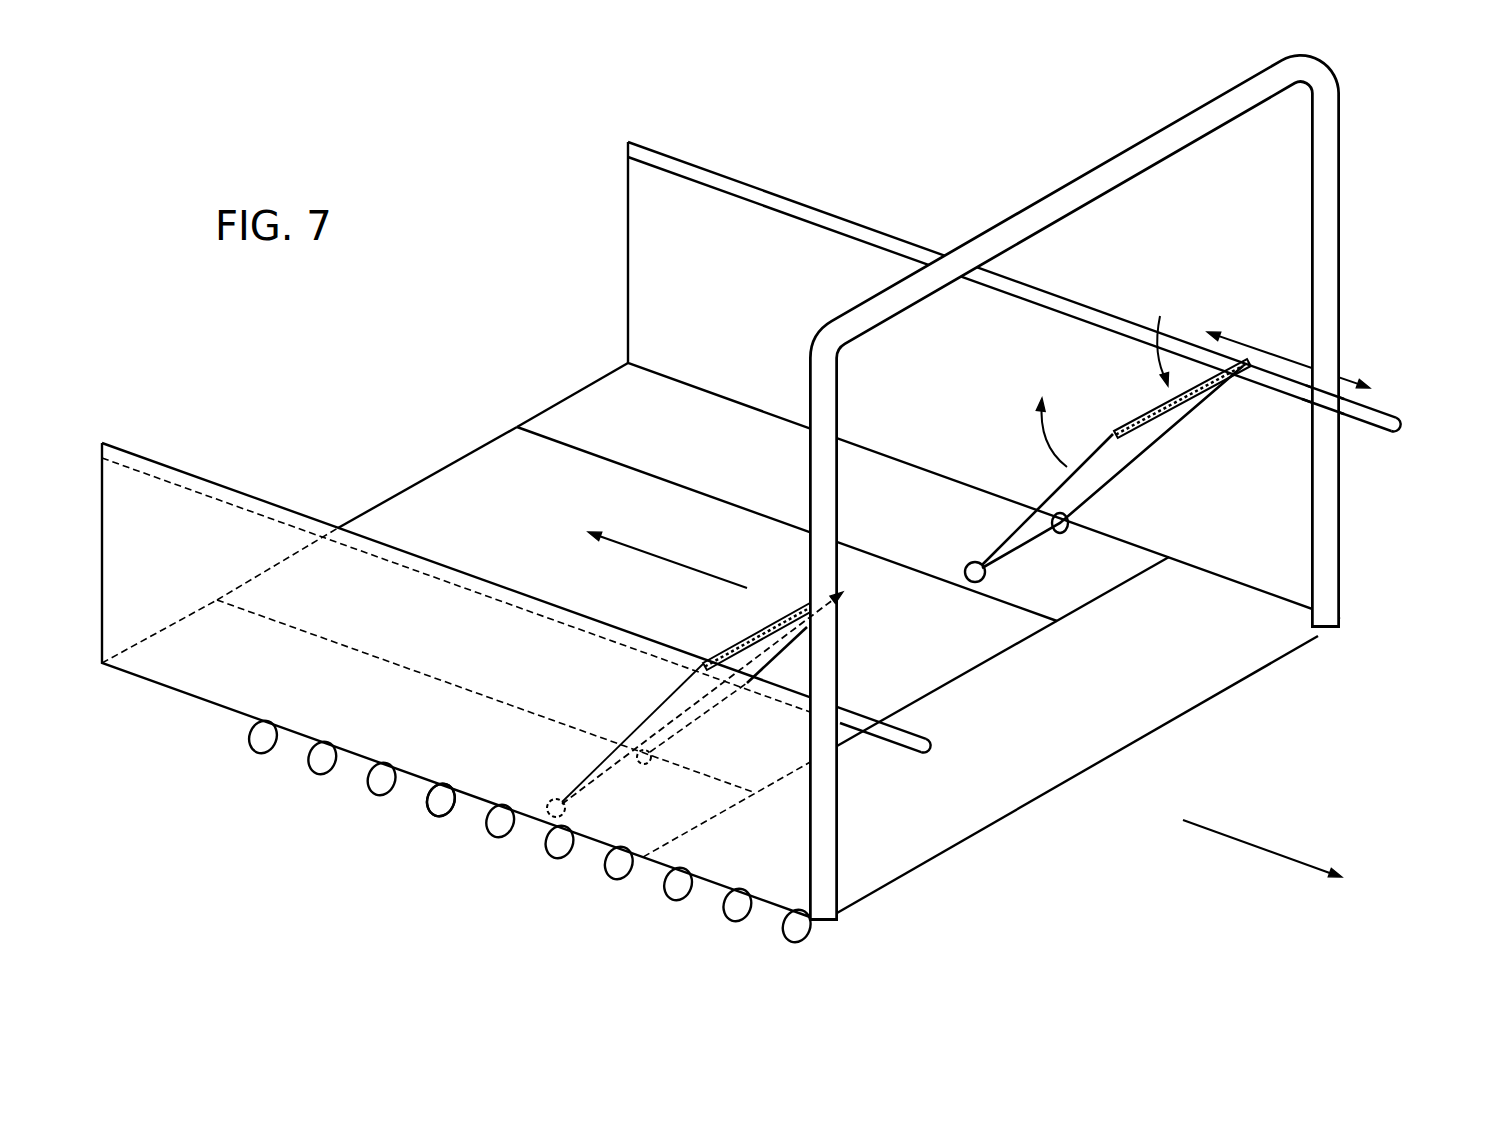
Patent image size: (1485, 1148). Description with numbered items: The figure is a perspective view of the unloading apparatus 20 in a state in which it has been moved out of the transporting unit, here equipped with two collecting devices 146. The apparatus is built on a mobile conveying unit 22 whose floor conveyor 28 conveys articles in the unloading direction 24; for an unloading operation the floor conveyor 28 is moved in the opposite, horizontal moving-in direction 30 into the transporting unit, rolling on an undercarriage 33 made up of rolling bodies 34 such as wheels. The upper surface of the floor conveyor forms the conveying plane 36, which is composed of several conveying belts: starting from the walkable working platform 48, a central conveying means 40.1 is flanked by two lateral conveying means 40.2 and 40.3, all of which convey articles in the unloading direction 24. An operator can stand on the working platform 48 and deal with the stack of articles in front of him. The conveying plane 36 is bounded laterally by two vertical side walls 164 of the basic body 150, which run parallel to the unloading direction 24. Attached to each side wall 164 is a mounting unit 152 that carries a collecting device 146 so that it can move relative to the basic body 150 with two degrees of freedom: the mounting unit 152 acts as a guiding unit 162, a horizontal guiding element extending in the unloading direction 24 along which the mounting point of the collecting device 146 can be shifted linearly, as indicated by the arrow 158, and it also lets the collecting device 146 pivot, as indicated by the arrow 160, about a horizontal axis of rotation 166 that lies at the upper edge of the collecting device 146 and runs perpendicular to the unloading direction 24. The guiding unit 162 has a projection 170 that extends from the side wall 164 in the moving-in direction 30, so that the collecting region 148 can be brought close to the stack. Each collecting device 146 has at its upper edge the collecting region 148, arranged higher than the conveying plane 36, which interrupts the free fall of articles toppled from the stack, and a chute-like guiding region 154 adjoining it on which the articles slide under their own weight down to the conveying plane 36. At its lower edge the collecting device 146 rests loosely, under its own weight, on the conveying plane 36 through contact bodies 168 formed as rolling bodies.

The unloading apparatus 20 is at (1422, 134).
The mobile conveying unit 22 is at (583, 408).
The unloading direction 24 is at (637, 565).
The floor conveyor 28 is at (418, 503).
The moving-in direction 30 is at (1273, 852).
The undercarriage 33 is at (381, 805).
The rolling bodies 34 is at (440, 814).
The conveying plane 36 is at (678, 510).
The central conveying means 40.1 is at (470, 468).
The lateral conveying means 40.2 is at (620, 392).
The lateral conveying means 40.3 is at (188, 635).
The walkable working platform 48 is at (1213, 690).
The collecting device 146 is at (745, 748).
The collecting region 148 is at (1140, 410).
The basic body 150 is at (1097, 182).
The mounting unit 152 is at (753, 194).
The guiding region 154 is at (1001, 540).
The arrow 158 is at (1283, 348).
The arrow 160 is at (1035, 432).
The guiding unit 162 is at (813, 213).
The side wall 164 is at (712, 216).
The axis of rotation 166 is at (1183, 400).
The contact bodies 168 is at (966, 566).
The projection 170 is at (1394, 408).